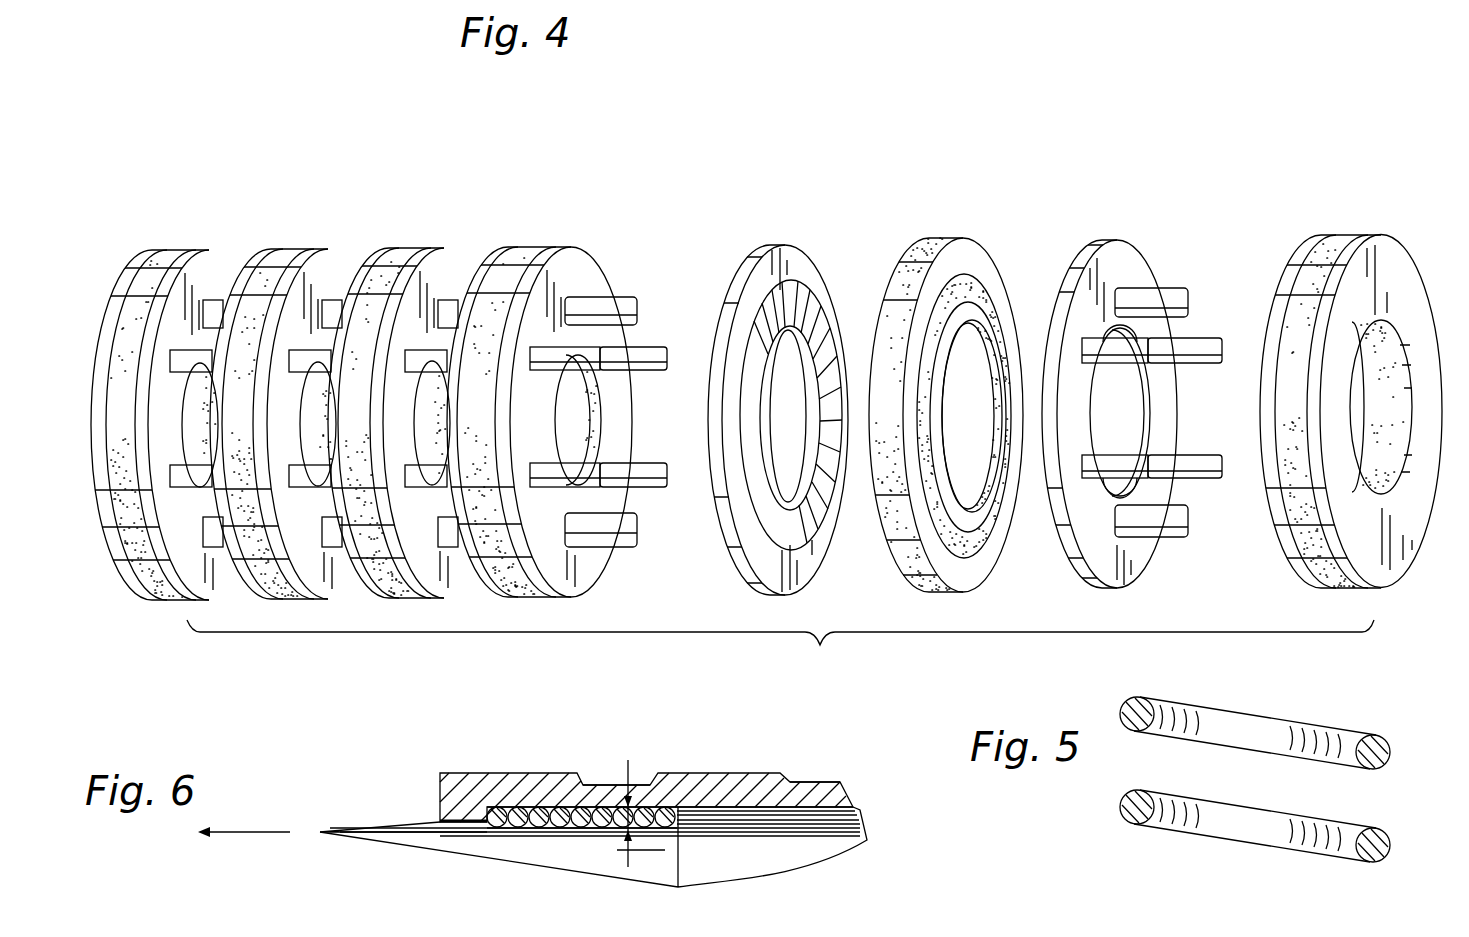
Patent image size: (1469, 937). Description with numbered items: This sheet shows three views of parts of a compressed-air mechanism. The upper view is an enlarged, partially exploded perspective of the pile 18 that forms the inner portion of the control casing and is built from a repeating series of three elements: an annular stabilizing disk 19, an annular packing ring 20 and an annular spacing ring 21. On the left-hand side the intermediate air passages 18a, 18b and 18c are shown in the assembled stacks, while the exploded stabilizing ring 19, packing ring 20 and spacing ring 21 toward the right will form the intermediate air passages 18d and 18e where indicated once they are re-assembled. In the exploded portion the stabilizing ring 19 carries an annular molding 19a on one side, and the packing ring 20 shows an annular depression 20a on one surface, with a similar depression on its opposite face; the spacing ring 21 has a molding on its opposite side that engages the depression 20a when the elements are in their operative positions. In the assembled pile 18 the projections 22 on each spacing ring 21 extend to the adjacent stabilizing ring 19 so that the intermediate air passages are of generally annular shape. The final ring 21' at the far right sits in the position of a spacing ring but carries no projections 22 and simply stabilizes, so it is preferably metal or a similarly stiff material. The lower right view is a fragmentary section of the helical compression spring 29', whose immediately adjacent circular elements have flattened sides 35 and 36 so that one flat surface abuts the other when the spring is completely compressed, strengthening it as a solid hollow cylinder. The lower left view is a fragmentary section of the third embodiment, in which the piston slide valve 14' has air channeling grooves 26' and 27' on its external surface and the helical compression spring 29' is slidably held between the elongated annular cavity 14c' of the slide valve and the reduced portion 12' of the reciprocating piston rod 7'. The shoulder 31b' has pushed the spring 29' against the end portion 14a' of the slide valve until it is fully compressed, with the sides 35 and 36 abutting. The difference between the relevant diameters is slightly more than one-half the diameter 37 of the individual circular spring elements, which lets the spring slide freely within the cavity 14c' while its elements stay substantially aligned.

In FIG. 4, the pile 18 is at (818, 648).
In FIG. 4, the intermediate air passage 18a is at (212, 272).
In FIG. 4, the intermediate air passage 18b is at (325, 272).
In FIG. 4, the intermediate air passage 18c is at (455, 268).
In FIG. 4, the intermediate air passage 18d is at (590, 272).
In FIG. 4, the intermediate air passage 18e is at (1170, 250).
In FIG. 4, the annular stabilizing disk 19 is at (740, 292).
In FIG. 4, the annular molding 19a is at (755, 337).
In FIG. 4, the annular packing ring 20 is at (960, 250).
In FIG. 4, the annular depression 20a is at (992, 305).
In FIG. 4, the annular spacing ring 21 is at (753, 427).
In FIG. 4, the final ring 21' is at (1381, 399).
In FIG. 4, the projections 22 is at (1162, 300).
In FIG. 5, the helical compression spring 29' is at (1265, 714).
In FIG. 6, the helical compression spring 29' is at (543, 847).
In FIG. 5, the side 35 is at (1150, 735).
In FIG. 6, the side 35 is at (572, 828).
In FIG. 5, the side 36 is at (1165, 795).
In FIG. 6, the side 36 is at (590, 828).
In FIG. 6, the piston slide valve 14' is at (646, 780).
In FIG. 6, the air channeling groove 26' is at (608, 762).
In FIG. 6, the diameter 37 is at (640, 792).
In FIG. 6, the air channeling groove 27' is at (813, 750).
In FIG. 6, the end portion 14a' is at (422, 804).
In FIG. 6, the reduced portion 12' is at (403, 856).
In FIG. 6, the shoulder 31b' is at (595, 846).
In FIG. 6, the elongated annular cavity 14c' is at (768, 831).
In FIG. 6, the reciprocating piston rod 7' is at (608, 847).